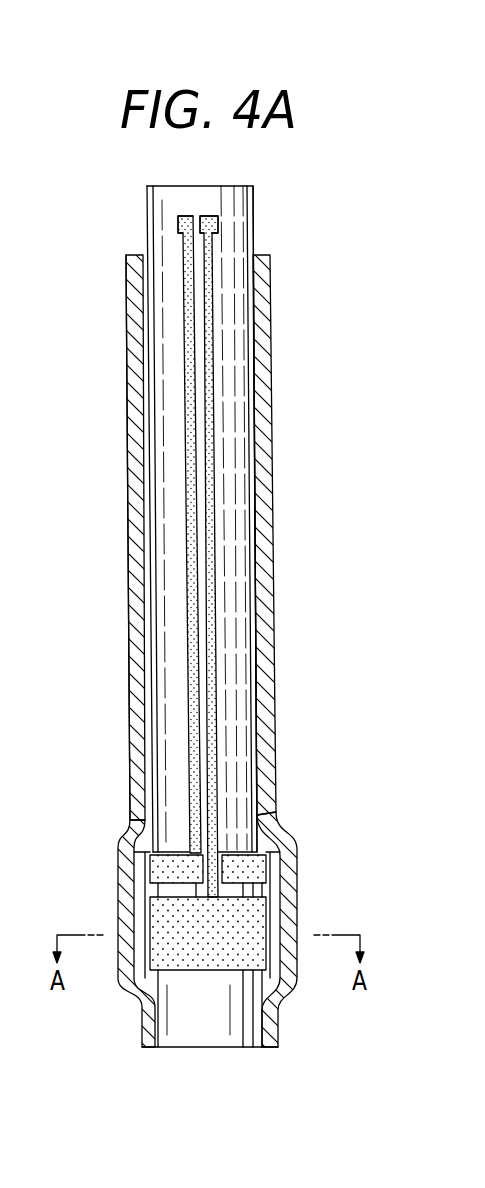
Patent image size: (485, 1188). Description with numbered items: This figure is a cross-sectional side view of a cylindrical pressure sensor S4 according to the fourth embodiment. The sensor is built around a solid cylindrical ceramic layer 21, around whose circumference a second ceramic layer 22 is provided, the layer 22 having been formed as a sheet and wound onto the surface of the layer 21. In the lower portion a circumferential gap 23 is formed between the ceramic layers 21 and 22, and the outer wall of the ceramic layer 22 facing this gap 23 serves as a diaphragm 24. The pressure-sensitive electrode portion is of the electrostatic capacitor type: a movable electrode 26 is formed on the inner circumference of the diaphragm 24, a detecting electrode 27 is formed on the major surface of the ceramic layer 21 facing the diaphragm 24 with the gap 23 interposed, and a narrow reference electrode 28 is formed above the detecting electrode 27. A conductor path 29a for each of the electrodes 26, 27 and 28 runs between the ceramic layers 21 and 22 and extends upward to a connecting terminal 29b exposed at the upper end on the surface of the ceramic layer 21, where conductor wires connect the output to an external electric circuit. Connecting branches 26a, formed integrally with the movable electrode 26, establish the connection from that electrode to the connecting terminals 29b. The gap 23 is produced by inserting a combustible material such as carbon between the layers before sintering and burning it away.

The pressure sensor S4 is at (307, 290).
The ceramic layer 21 is at (240, 503).
The ceramic layer 22 is at (132, 486).
The circumferential gap 23 is at (145, 995).
The diaphragm 24 is at (122, 902).
The movable electrode 26 is at (139, 955).
The connecting branches 26a is at (131, 660).
The detecting electrode 27 is at (232, 963).
The reference electrode 28 is at (257, 863).
The conductor path 29a is at (193, 423).
The connecting terminal 29b is at (178, 219).